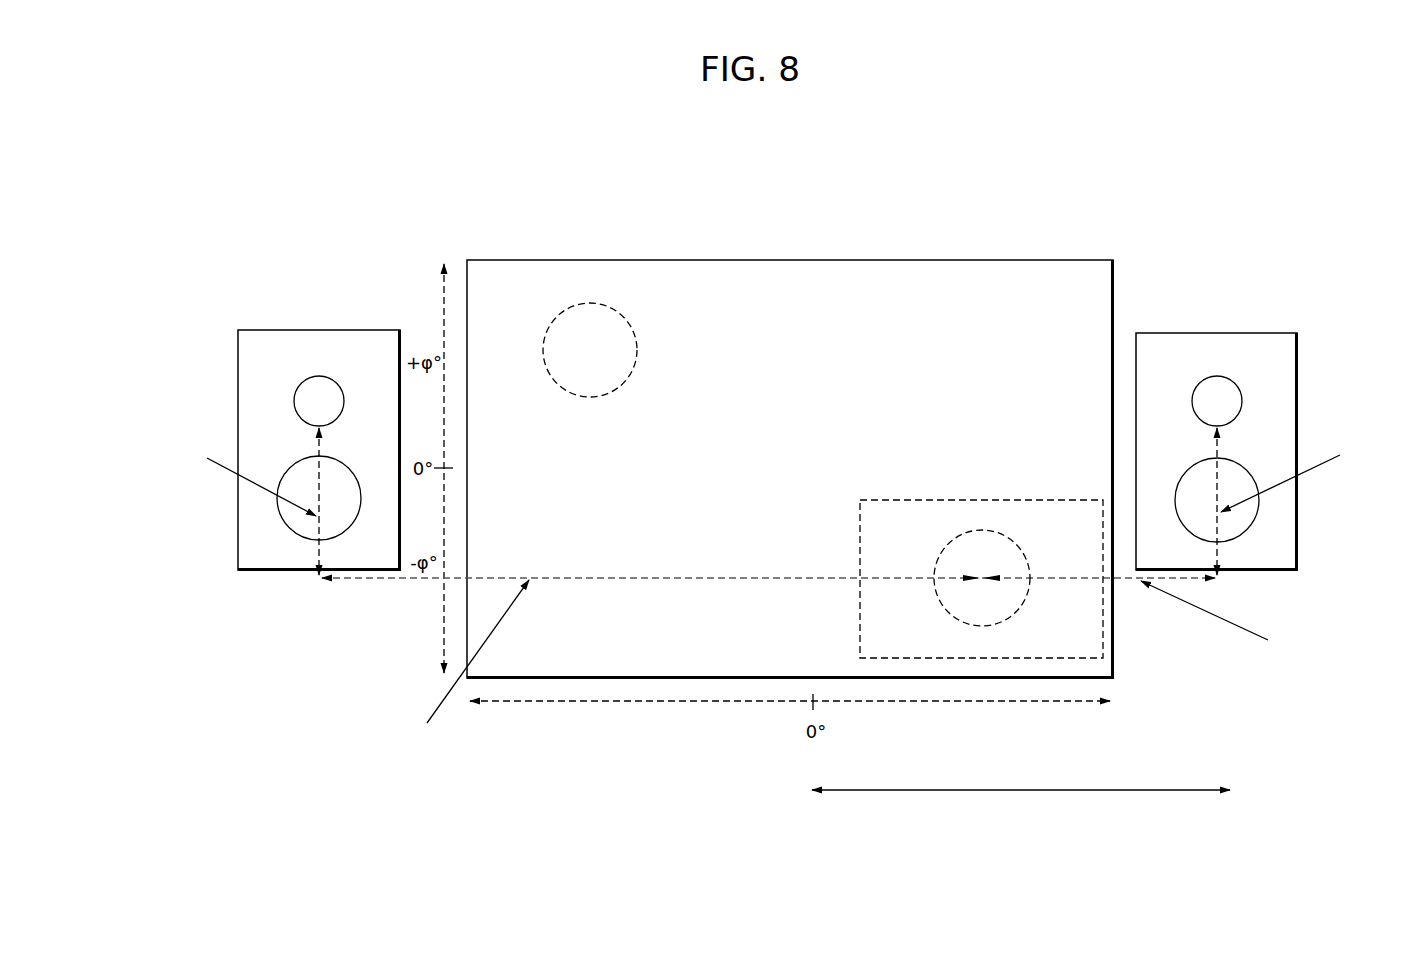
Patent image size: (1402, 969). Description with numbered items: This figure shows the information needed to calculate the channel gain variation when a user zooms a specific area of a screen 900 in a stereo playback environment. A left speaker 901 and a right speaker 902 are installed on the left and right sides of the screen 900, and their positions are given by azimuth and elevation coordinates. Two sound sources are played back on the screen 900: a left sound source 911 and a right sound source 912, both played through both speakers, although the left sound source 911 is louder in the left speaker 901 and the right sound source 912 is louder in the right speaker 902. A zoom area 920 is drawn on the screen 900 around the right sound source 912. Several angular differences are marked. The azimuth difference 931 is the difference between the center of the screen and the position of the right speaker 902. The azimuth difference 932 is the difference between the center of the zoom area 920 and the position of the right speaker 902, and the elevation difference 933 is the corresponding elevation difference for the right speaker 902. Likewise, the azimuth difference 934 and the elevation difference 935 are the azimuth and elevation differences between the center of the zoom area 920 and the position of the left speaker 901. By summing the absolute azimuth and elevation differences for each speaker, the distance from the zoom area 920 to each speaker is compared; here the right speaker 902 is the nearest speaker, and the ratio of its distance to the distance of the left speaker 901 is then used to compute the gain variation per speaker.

The screen 900 is at (788, 260).
The left speaker 901 is at (318, 330).
The right speaker 902 is at (1215, 333).
The left sound source 911 is at (590, 302).
The right sound source 912 is at (1027, 558).
The zoom area 920 is at (982, 499).
The azimuth difference between screen center and right speaker 931 is at (1021, 758).
The azimuth difference between zoom area center and right speaker 932 is at (1247, 626).
The elevation difference between zoom area center and right speaker 933 is at (1311, 469).
The azimuth difference between zoom area center and left speaker 934 is at (440, 676).
The elevation difference between zoom area center and left speaker 935 is at (220, 468).